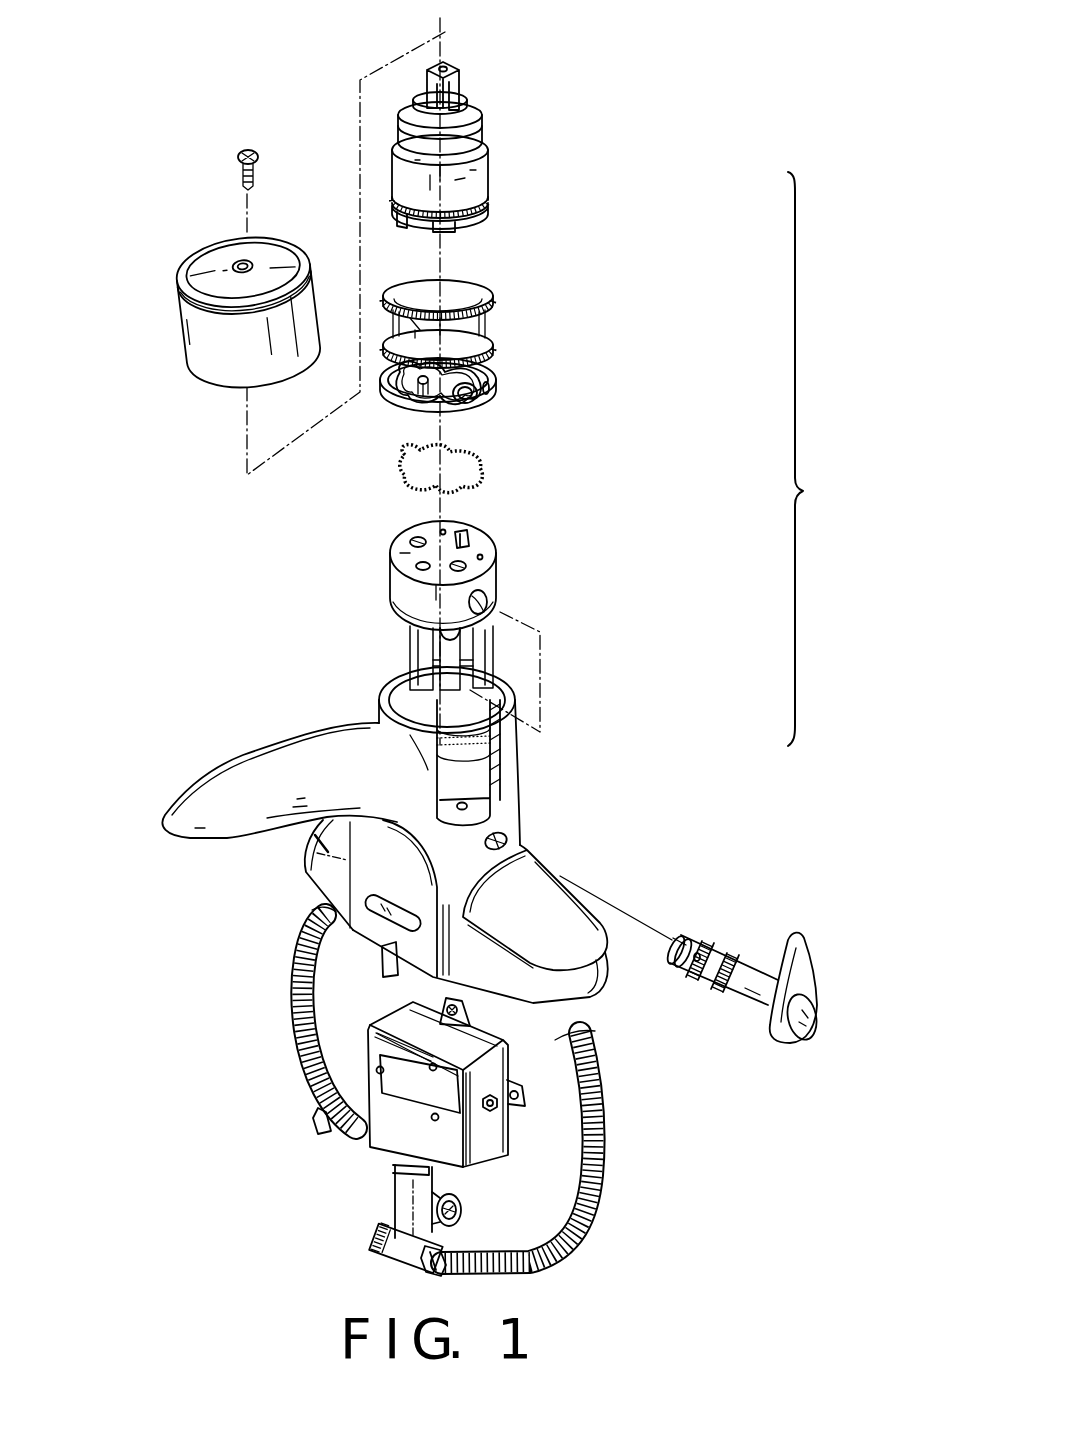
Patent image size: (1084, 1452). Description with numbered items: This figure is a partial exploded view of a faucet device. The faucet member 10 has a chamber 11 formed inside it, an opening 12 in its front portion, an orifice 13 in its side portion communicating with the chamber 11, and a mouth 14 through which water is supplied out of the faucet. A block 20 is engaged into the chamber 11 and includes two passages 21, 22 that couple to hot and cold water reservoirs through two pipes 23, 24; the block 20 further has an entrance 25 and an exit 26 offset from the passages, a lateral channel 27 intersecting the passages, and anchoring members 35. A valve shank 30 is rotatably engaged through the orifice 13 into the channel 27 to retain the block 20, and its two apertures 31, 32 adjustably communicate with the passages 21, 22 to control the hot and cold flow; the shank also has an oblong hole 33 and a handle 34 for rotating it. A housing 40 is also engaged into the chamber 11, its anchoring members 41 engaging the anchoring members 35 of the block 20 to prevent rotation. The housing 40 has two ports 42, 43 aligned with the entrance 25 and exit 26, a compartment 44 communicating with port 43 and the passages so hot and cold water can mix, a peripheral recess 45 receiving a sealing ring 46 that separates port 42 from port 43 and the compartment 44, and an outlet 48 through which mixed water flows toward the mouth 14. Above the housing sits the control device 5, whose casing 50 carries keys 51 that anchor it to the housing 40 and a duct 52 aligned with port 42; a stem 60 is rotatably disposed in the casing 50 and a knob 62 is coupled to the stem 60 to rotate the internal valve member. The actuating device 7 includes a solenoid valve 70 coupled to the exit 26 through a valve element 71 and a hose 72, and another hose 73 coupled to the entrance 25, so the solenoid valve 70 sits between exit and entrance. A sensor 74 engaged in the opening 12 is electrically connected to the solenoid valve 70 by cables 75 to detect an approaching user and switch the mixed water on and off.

The control device 5 is at (388, 130).
The stem 60 is at (451, 62).
The casing 50 is at (398, 160).
The duct 52 is at (490, 220).
The keys 51 is at (412, 226).
The knob 62 is at (215, 256).
The housing 40 is at (470, 290).
The outlet 48 is at (410, 333).
The compartment 44 is at (395, 402).
The peripheral recess 45 is at (495, 378).
The port 43 is at (402, 400).
The port 42 is at (466, 402).
The anchoring members 41 is at (492, 393).
The sealing ring 46 is at (477, 458).
The block 20 is at (412, 605).
The anchoring members 35 is at (440, 530).
The entrance 25 is at (466, 538).
The passage 21 is at (412, 544).
The passage 22 is at (465, 566).
The exit 26 is at (420, 567).
The channel 27 is at (484, 603).
The pipe 23 is at (415, 648).
The pipe 24 is at (470, 660).
The faucet member 10 is at (530, 897).
The chamber 11 is at (462, 777).
The orifice 13 is at (507, 841).
The mouth 14 is at (192, 843).
The sensor 74 is at (375, 903).
The opening 12 is at (410, 927).
The hose 73 is at (303, 1012).
The electrical cables 75 is at (313, 1130).
The solenoid valve 70 is at (392, 1132).
The valve element 71 is at (393, 1206).
The actuating device 7 is at (424, 1275).
The hose 72 is at (598, 1140).
The valve shank 30 is at (752, 1010).
The aperture 31 is at (730, 962).
The aperture 32 is at (667, 941).
The oblong hole 33 is at (706, 975).
The handle 34 is at (800, 977).